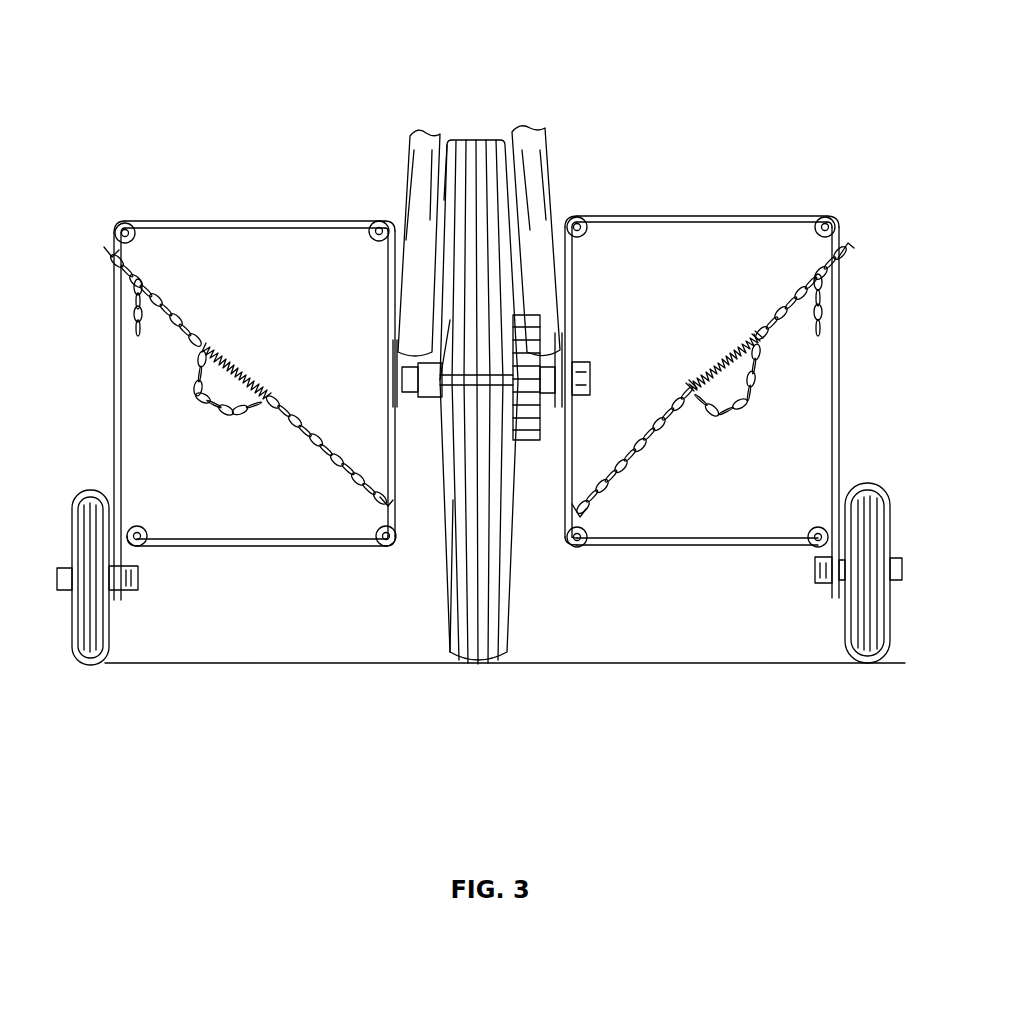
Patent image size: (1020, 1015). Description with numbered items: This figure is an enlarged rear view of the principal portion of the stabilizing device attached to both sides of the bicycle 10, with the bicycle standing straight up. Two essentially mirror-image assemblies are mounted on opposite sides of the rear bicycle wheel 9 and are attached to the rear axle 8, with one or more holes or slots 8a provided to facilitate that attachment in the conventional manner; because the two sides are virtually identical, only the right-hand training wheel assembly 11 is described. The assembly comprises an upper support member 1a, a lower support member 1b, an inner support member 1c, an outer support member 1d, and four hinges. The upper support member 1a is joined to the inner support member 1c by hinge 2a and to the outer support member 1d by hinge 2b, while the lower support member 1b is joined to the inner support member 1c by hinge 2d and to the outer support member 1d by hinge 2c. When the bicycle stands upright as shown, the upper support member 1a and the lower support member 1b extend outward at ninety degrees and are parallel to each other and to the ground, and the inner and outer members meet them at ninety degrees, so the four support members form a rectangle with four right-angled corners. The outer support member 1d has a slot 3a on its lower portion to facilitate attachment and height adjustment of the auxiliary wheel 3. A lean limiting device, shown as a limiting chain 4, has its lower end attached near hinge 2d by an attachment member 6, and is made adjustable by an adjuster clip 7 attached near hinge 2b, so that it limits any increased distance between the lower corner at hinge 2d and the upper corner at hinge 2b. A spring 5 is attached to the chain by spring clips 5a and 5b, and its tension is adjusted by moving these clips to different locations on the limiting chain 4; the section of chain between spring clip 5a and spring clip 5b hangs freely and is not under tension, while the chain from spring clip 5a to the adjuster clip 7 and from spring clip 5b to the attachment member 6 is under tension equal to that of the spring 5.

The upper support member 1a is at (706, 218).
The lower support member 1b is at (694, 543).
The inner support member 1c is at (570, 465).
The outer support member 1d is at (839, 380).
The hinge 2a is at (577, 225).
The hinge 2b is at (826, 227).
The hinge 2c is at (817, 540).
The hinge 2d is at (578, 541).
The auxiliary wheel 3 is at (868, 482).
The slot 3a is at (830, 590).
The limiting chain 4 is at (646, 447).
The spring 5 is at (720, 348).
The spring clip 5a is at (756, 340).
The spring clip 5b is at (692, 386).
The attachment member 6 is at (580, 513).
The adjuster clip 7 is at (846, 251).
The rear axle 8 is at (586, 367).
The holes or slots 8a is at (572, 372).
The rear bicycle wheel 9 is at (476, 178).
The bicycle 10 is at (540, 150).
The training wheel assembly 11 is at (718, 334).